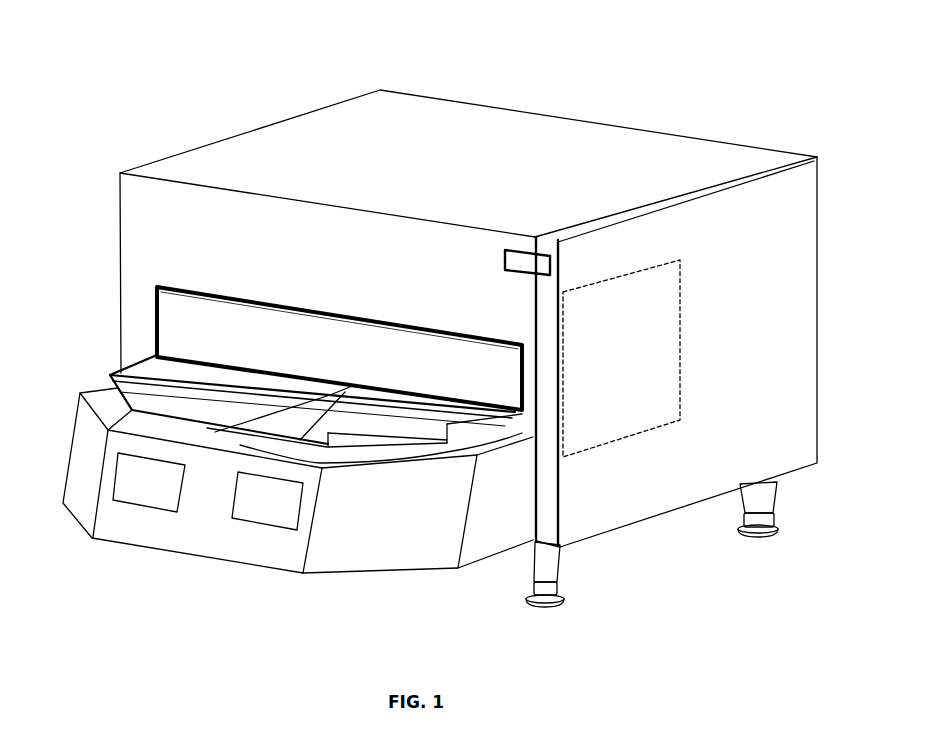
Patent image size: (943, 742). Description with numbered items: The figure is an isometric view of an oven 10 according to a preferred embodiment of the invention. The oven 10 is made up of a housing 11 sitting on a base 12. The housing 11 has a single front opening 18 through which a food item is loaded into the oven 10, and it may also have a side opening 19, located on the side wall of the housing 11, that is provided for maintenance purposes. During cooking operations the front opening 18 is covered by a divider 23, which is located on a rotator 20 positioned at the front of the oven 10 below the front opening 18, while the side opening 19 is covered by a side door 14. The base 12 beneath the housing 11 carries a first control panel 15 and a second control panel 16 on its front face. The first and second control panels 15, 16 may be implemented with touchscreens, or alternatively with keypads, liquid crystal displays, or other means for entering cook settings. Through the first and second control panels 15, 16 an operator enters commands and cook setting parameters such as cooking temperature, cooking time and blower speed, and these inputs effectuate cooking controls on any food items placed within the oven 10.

The oven 10 is at (581, 111).
The housing 11 is at (374, 104).
The base 12 is at (400, 540).
The side door 14 is at (637, 507).
The first control panel 15 is at (149, 482).
The second control panel 16 is at (267, 501).
The front opening 18 is at (153, 310).
The side opening 19 is at (622, 300).
The rotator 20 is at (110, 377).
The divider 23 is at (339, 349).